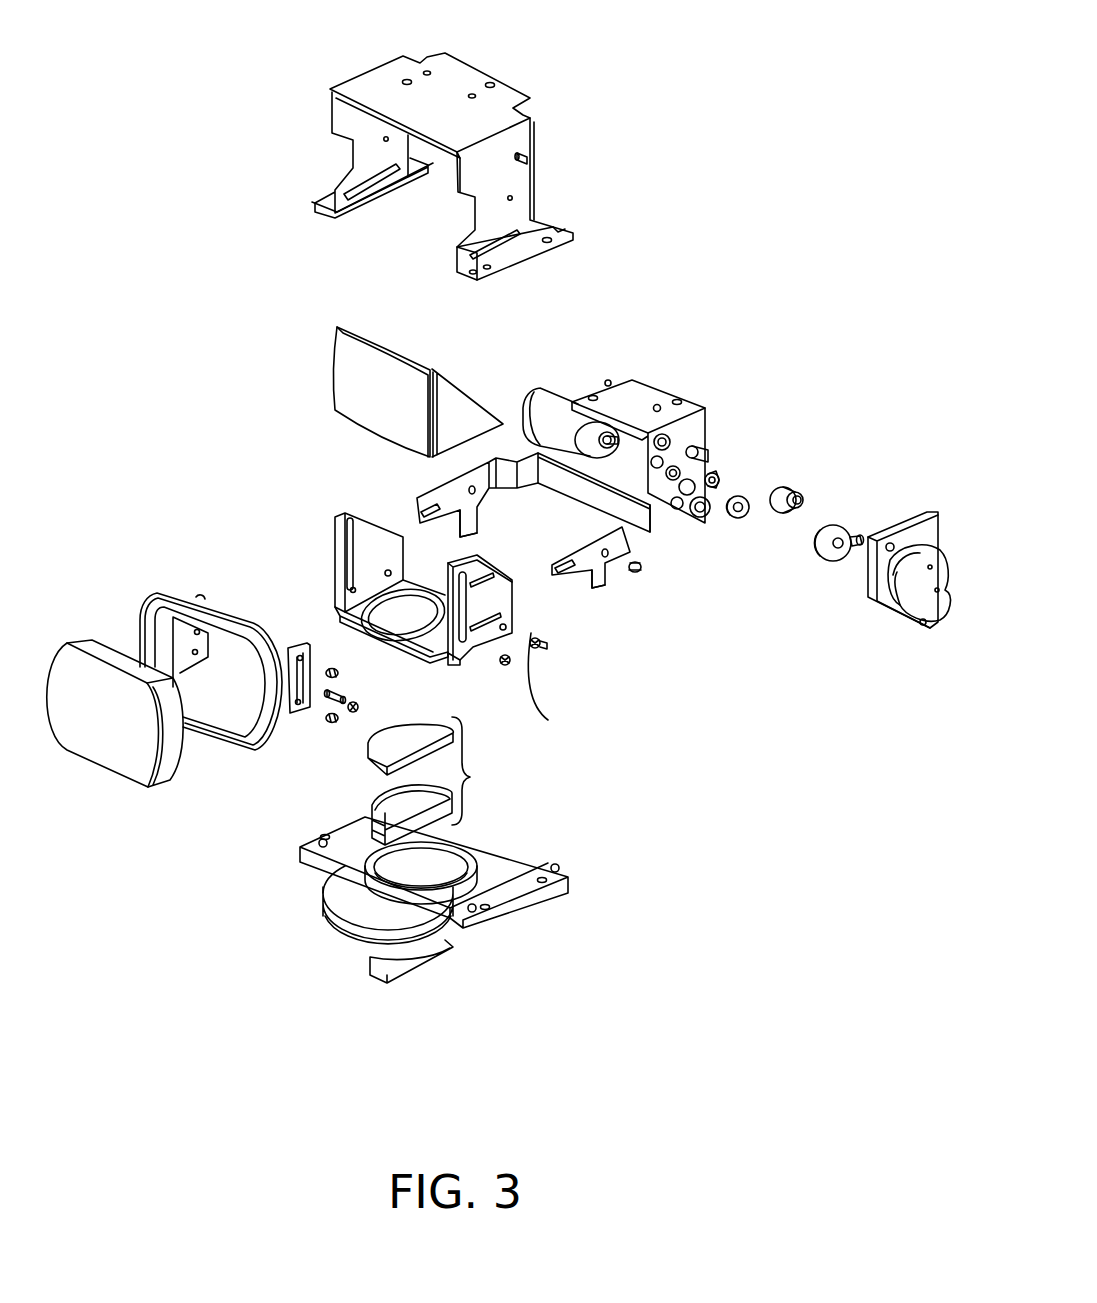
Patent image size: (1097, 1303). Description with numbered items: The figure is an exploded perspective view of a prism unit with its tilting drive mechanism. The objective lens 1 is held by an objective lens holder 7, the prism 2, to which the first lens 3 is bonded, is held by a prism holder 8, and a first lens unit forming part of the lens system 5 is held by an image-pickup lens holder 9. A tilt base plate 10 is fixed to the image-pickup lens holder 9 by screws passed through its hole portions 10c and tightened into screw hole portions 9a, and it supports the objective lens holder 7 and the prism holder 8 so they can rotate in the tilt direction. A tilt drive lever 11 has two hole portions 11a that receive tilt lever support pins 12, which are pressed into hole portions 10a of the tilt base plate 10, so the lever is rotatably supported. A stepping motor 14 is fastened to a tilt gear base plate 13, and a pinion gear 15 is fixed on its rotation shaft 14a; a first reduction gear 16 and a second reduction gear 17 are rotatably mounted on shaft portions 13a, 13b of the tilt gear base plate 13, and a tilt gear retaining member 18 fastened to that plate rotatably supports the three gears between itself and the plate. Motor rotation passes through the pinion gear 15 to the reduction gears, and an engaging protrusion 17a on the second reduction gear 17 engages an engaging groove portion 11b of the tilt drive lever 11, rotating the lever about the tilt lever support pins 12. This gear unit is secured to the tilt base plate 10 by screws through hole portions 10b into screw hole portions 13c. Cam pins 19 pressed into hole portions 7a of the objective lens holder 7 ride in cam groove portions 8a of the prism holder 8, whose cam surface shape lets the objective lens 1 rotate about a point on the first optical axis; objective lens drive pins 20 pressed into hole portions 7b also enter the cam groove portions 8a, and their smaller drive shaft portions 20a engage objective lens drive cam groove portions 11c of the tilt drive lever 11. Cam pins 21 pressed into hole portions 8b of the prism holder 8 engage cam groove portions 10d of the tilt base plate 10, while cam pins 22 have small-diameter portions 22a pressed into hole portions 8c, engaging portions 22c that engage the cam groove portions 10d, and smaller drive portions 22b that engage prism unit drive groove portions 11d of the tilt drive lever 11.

The objective lens 1 is at (72, 680).
The prism 2 is at (448, 400).
The first lens 3 is at (345, 356).
The lens system 5 is at (477, 987).
The objective lens holder 7 is at (204, 649).
The hole portions 7a is at (302, 657).
The hole portions 7b is at (195, 630).
The prism holder 8 is at (397, 582).
The cam groove portions 8a is at (348, 588).
The hole portions 8b is at (352, 598).
The hole portions 8c is at (388, 572).
The image-pickup lens holder 9 is at (432, 888).
The screw hole portions 9a is at (322, 835).
The tilt base plate 10 is at (460, 146).
The hole portions 10a is at (383, 138).
The hole portions 10b is at (405, 80).
The hole portions 10c is at (565, 242).
The cam groove portions 10d is at (345, 199).
The tilt drive lever 11 is at (551, 559).
The hole portions 11a is at (468, 488).
The engaging groove portion 11b is at (650, 535).
The objective lens drive cam groove portions 11c is at (420, 512).
The prism unit drive groove portions 11d is at (478, 520).
The tilt lever support pins 12 is at (641, 570).
The tilt gear base plate 13 is at (662, 401).
The shaft portion 13a is at (700, 448).
The shaft portion 13b is at (718, 472).
The screw hole portions 13c is at (590, 396).
The stepping motor 14 is at (562, 381).
The rotation shaft 14a is at (606, 436).
The pinion gear 15 is at (741, 497).
The first reduction gear 16 is at (789, 494).
The second reduction gear 17 is at (855, 502).
The engaging protrusion 17a is at (862, 536).
The tilt gear retaining member 18 is at (905, 522).
The cam pins 19 is at (343, 672).
The objective lens drive pins 20 is at (373, 697).
The drive shaft portions 20a is at (345, 697).
The cam pins 21 is at (505, 667).
The cam pins 22 is at (553, 675).
The small-diameter portions 22a is at (535, 638).
The drive portion 22b is at (543, 653).
The engaging portions 22c is at (545, 648).